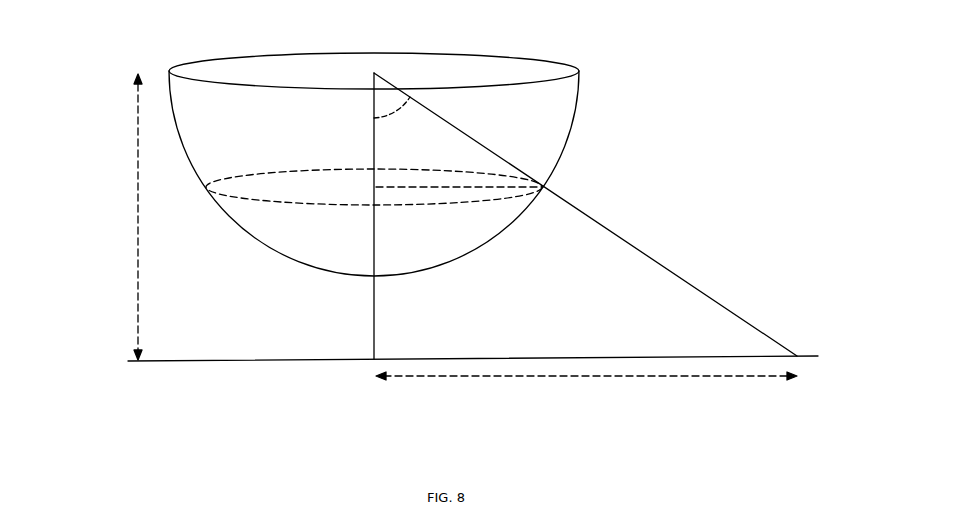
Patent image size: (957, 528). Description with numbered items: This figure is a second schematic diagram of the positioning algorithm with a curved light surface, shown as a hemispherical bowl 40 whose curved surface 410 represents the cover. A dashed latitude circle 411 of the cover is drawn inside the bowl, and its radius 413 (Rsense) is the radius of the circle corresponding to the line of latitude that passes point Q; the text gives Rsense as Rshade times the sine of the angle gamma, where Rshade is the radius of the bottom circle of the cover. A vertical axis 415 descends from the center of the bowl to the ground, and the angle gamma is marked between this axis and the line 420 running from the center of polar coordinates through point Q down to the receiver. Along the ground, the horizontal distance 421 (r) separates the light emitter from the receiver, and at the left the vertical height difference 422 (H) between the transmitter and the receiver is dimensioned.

The optical element 40 is at (731, 64).
The curved lens surface 410 is at (567, 147).
The radius of the bottom circle of the cover 411 is at (538, 184).
The radius of a circle corresponding to a line of latitude that passes point Q 413 is at (470, 187).
The optical axis 415 is at (375, 73).
The line from the center of polar coordinates to the receiver 420 is at (797, 356).
The horizontal distance between the light emitter and the receiver 421 is at (703, 376).
The vertical height difference between the transmitter and the receiver 422 is at (137, 182).